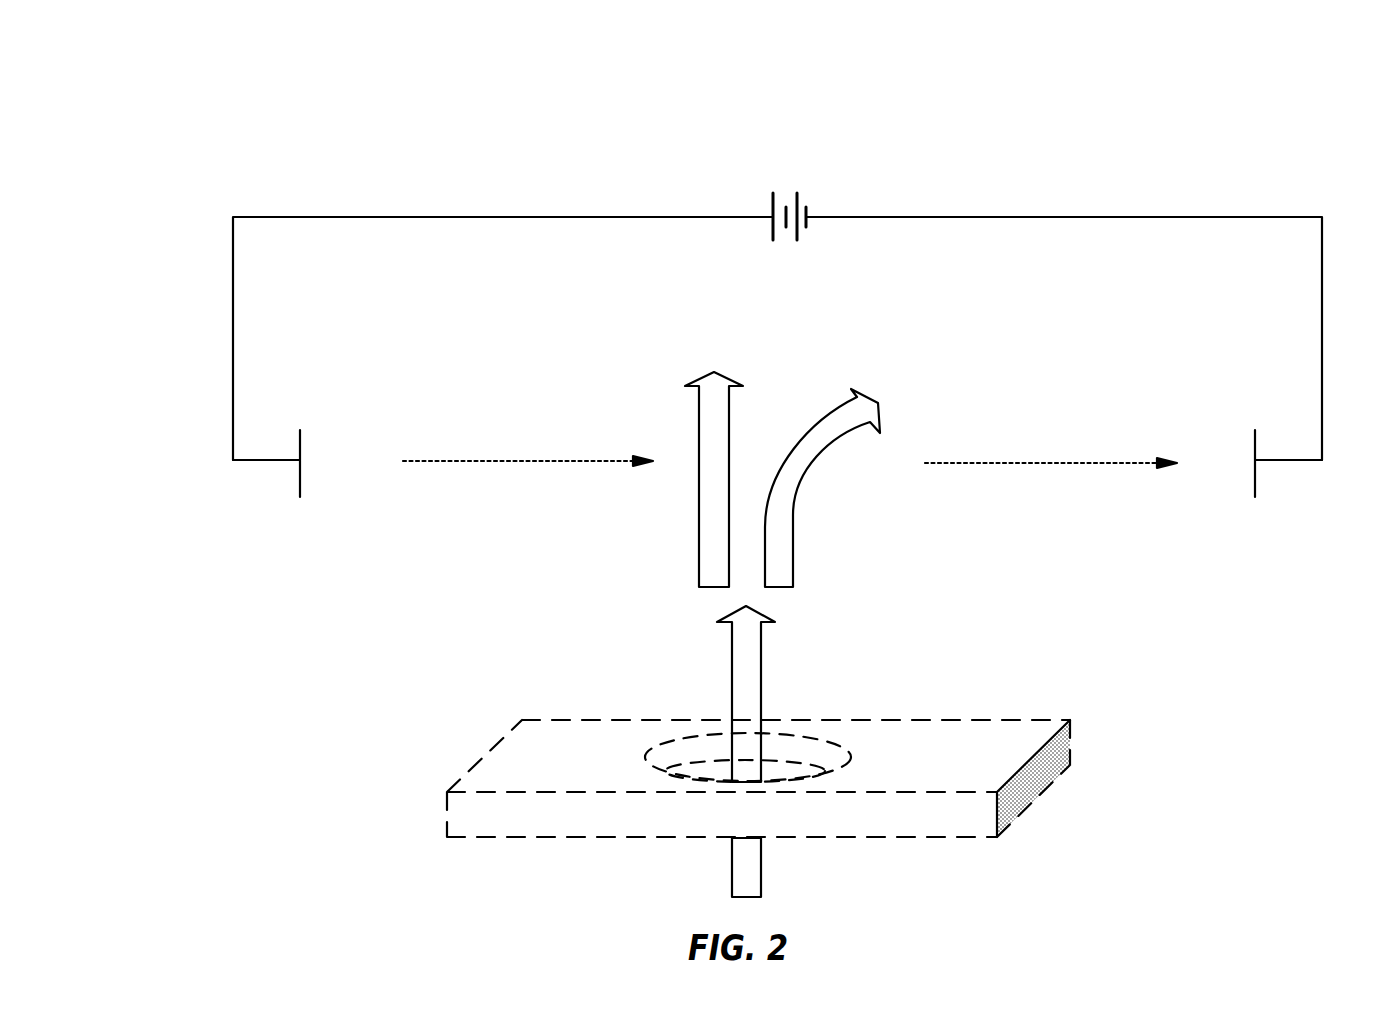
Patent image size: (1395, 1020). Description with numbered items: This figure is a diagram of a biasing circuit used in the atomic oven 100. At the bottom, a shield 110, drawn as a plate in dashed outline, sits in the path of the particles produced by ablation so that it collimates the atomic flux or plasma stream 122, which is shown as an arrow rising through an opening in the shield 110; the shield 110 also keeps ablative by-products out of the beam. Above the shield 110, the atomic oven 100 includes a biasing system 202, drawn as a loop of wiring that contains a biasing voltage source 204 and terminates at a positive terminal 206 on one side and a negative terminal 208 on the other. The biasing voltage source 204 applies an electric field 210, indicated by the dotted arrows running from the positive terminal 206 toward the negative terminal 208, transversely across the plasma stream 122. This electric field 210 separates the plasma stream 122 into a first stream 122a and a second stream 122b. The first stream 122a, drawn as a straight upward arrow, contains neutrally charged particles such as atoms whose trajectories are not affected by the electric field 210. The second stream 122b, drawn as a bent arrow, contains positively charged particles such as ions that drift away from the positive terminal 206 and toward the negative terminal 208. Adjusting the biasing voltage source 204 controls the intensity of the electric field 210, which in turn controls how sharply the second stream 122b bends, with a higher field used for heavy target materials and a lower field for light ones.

The atomic oven 100 is at (128, 121).
The biasing system 202 is at (1308, 171).
The biasing voltage source 204 is at (773, 201).
The positive terminal 206 is at (300, 430).
The negative terminal 208 is at (1255, 430).
The electric field 210 is at (458, 462).
The plasma stream 122 is at (698, 654).
The first stream 122a is at (678, 345).
The second stream 122b is at (920, 380).
The shield 110 is at (482, 755).